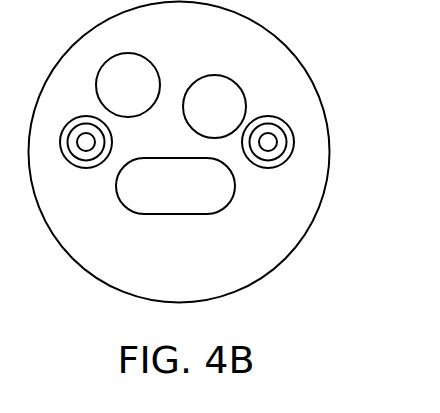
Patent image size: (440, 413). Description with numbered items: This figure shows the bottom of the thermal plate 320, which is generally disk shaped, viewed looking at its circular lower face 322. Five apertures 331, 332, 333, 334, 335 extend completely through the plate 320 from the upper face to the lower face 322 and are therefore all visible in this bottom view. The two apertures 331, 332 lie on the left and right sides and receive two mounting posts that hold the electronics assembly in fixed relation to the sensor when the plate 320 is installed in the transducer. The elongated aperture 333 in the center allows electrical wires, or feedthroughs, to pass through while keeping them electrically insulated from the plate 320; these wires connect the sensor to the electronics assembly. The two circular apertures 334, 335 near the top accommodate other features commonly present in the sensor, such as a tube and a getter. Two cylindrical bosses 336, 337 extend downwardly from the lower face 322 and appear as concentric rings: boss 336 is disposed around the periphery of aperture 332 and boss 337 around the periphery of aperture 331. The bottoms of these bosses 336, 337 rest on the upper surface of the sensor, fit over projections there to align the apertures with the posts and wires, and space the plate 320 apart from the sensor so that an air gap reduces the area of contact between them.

The plate 320 is at (315, 245).
The lower face 322 is at (160, 274).
The aperture 331 is at (82, 134).
The aperture 332 is at (272, 133).
The aperture 333 is at (155, 202).
The aperture 334 is at (107, 100).
The aperture 335 is at (236, 122).
The cylindrical boss 336 is at (268, 168).
The cylindrical boss 337 is at (84, 168).